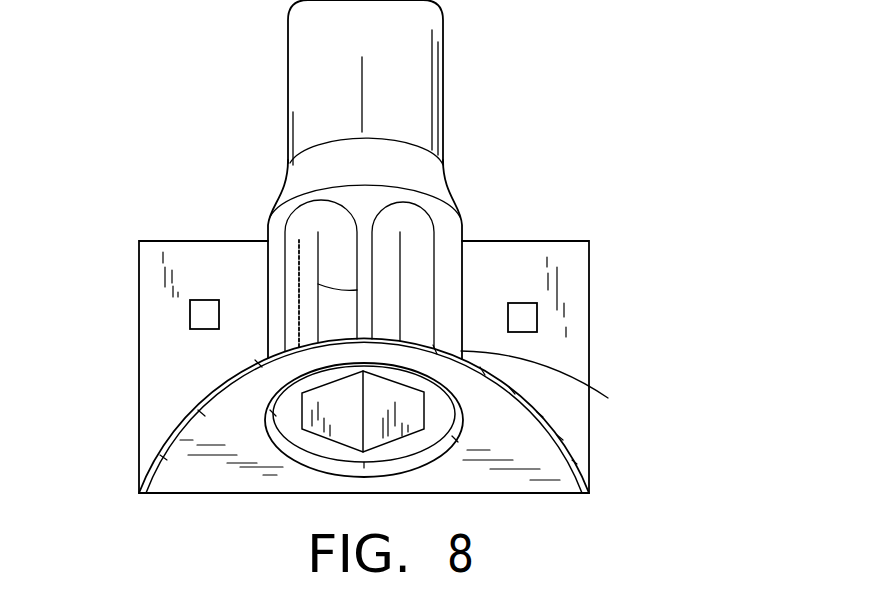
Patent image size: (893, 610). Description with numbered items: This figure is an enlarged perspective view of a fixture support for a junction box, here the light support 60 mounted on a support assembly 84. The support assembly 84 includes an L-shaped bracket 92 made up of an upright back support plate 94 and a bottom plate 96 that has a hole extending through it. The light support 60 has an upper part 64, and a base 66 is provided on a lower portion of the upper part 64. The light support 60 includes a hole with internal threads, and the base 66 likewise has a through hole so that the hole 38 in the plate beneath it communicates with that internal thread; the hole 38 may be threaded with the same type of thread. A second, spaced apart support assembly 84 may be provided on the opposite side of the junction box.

The hole 38 is at (313, 462).
The light support 60 is at (460, 194).
The upper part 64 is at (445, 65).
The base 66 is at (553, 385).
The support assembly 84 is at (120, 283).
The L-shaped bracket 92 is at (116, 357).
The back support plate 94 is at (167, 397).
The bottom plate 96 is at (177, 470).